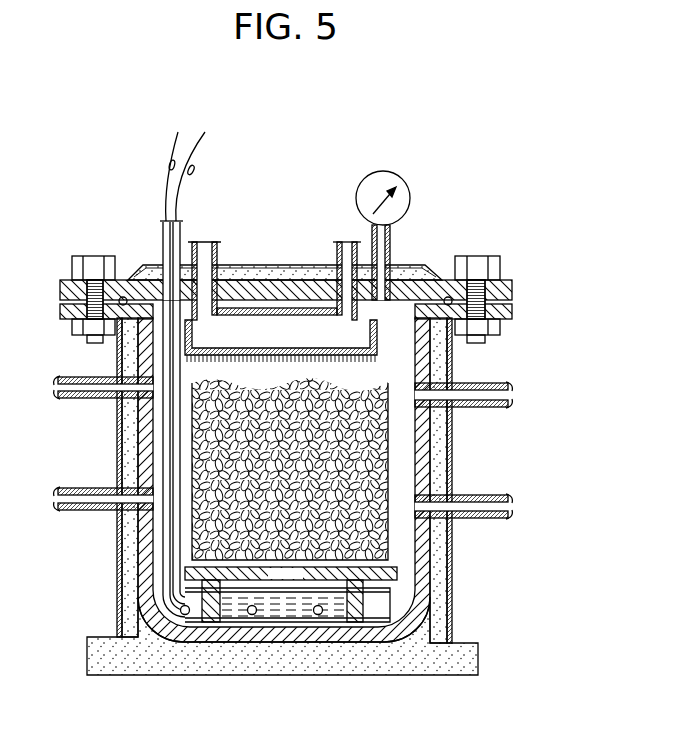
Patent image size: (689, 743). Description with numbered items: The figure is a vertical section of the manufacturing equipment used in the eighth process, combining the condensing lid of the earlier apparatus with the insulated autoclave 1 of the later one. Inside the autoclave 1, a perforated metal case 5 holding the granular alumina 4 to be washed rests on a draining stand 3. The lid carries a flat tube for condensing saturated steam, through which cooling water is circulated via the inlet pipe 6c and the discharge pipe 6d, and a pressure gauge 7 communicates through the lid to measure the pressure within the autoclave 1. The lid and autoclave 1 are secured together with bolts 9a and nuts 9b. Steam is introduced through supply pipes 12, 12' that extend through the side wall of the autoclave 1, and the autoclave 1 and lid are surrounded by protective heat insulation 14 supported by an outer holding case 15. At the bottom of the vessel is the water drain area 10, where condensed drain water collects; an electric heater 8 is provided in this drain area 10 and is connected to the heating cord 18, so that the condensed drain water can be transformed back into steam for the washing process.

The autoclave 1 is at (452, 465).
The draining stand 3 is at (410, 565).
The granular alumina 4 is at (440, 440).
The perforated metal case 5 is at (390, 480).
The inlet pipe 6c is at (208, 245).
The discharge pipe 6d is at (348, 243).
The pressure gauge 7 is at (397, 183).
The electric heater 8 is at (165, 560).
The bolts 9a is at (500, 270).
The nuts 9b is at (500, 337).
The bottom water drain area 10 is at (262, 598).
The supply pipe 12 is at (312, 386).
The supply pipe 12' is at (314, 510).
The protective heat insulation 14 is at (440, 600).
The outer holding case 15 is at (452, 627).
The heating cord 18 is at (197, 153).